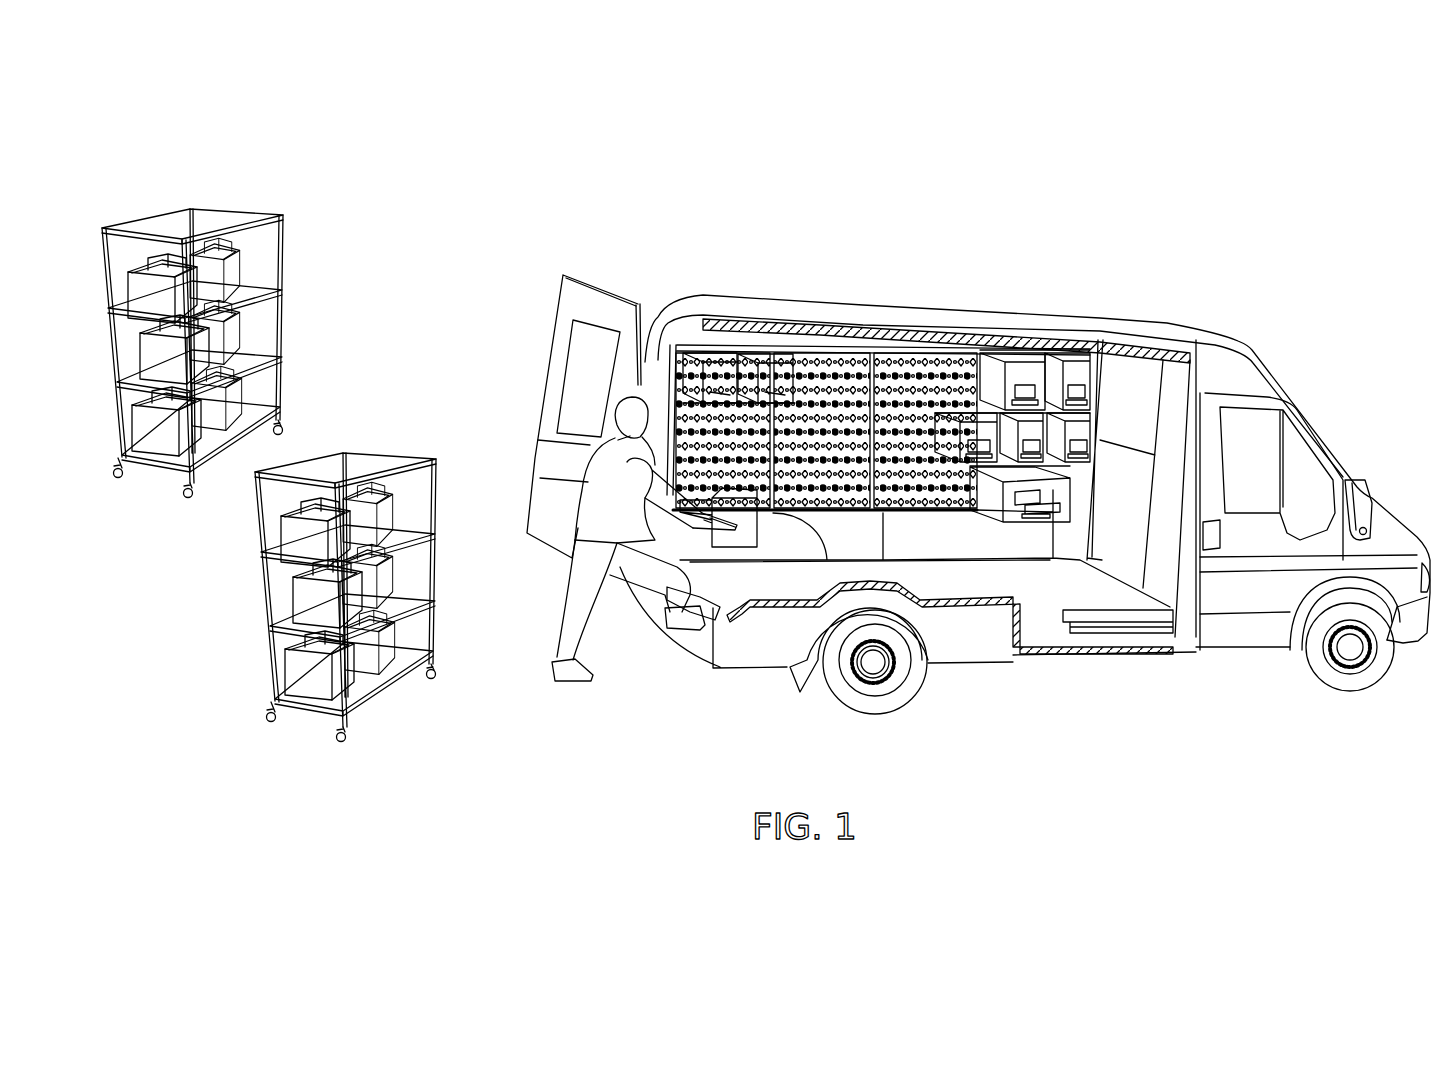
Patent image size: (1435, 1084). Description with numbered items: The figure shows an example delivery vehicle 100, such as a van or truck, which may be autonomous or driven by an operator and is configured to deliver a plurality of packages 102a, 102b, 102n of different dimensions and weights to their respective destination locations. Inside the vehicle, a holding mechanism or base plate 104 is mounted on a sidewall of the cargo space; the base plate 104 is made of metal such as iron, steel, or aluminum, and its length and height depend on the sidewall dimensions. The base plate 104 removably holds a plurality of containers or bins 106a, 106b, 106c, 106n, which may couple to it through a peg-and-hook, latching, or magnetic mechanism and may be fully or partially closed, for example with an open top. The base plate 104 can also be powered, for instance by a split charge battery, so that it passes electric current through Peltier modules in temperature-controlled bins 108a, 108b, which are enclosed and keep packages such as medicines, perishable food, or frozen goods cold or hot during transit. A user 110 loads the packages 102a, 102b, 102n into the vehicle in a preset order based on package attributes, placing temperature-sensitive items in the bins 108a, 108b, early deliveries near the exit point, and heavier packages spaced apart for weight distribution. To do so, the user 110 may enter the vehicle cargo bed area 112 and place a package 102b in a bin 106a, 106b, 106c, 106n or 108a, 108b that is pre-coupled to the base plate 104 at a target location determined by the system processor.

The delivery vehicle 100 is at (1240, 210).
The package 102a is at (1085, 369).
The package 102b is at (400, 662).
The package 102n is at (247, 347).
The holding mechanism (base plate) 104 is at (907, 370).
The bin 106a is at (1073, 372).
The bin 106b is at (747, 540).
The bin 106c is at (365, 667).
The bin 106n is at (163, 443).
The temperature-controlled bin 108a is at (722, 376).
The temperature-controlled bin 108b is at (777, 377).
The user 110 is at (603, 480).
The vehicle cargo bed area 112 is at (1035, 587).